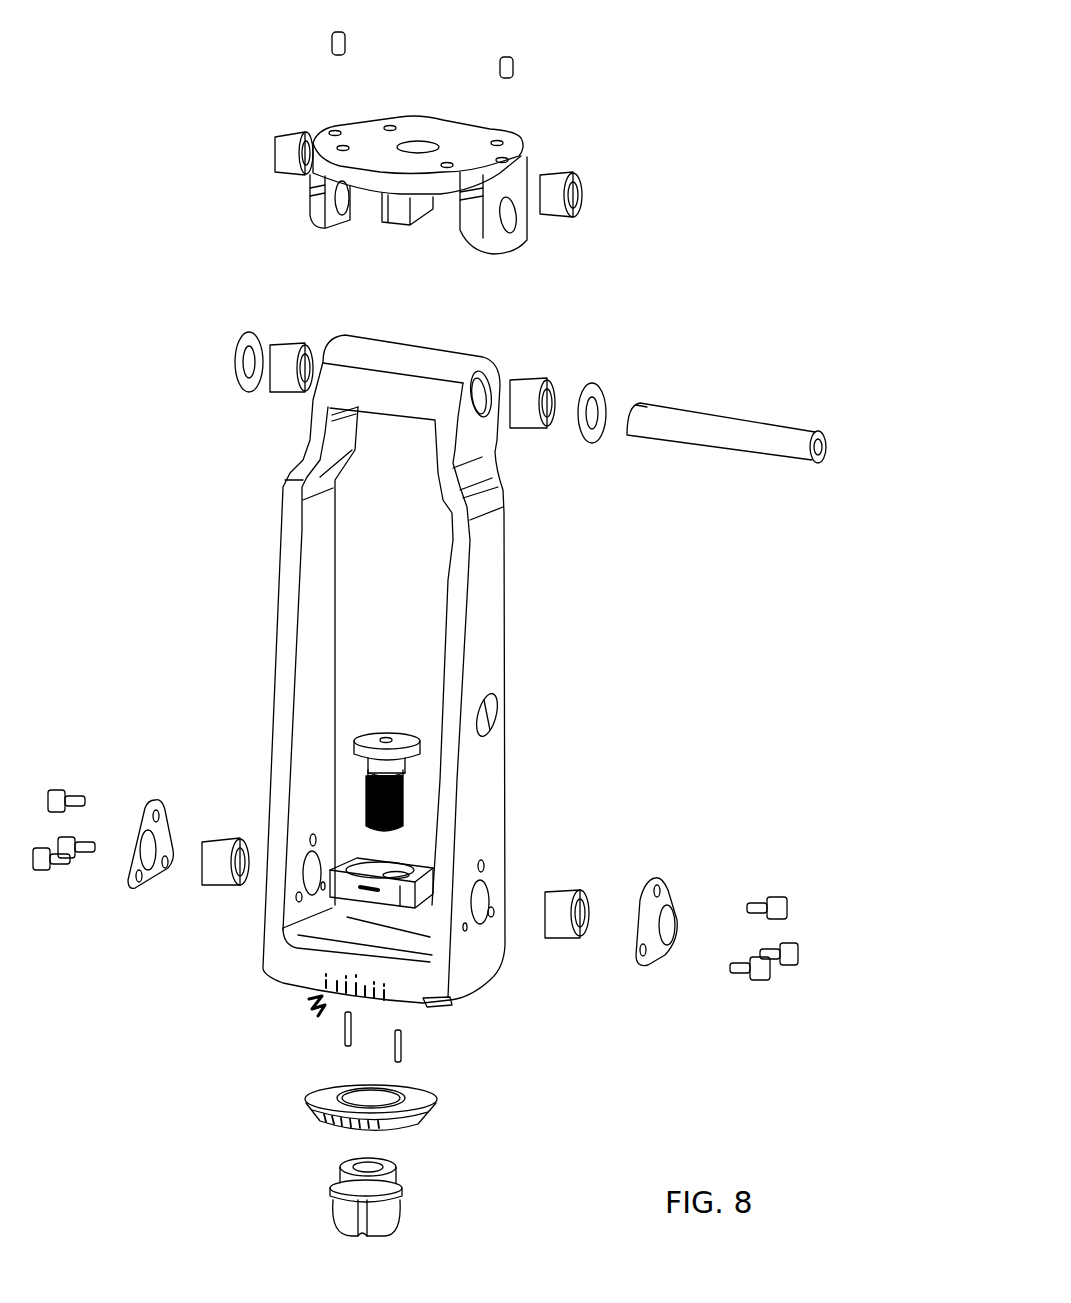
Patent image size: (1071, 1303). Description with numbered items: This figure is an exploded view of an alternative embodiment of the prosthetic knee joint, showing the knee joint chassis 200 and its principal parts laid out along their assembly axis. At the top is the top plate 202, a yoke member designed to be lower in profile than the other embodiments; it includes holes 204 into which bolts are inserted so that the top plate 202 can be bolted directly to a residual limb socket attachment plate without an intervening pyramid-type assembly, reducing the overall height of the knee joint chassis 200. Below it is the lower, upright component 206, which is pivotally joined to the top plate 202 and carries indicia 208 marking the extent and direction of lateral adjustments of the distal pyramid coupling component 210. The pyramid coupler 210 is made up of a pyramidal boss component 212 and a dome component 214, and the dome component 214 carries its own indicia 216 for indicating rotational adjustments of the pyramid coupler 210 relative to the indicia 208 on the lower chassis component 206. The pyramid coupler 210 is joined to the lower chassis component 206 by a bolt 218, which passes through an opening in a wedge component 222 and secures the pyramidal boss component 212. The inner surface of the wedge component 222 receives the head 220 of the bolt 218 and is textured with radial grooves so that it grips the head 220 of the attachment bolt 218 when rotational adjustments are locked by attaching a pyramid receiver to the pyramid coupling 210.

The knee joint chassis 200 is at (843, 125).
The top plate 202 is at (518, 152).
The holes 204 is at (496, 141).
The lower upright component 206 is at (487, 640).
The indicia 208 is at (312, 1012).
The distal pyramid coupling component 210 is at (338, 1194).
The pyramidal boss component 212 is at (385, 1225).
The dome component 214 is at (417, 1125).
The indicia 216 is at (327, 1096).
The bolt 218 is at (360, 795).
The head 220 is at (400, 728).
The wedge component 222 is at (378, 893).